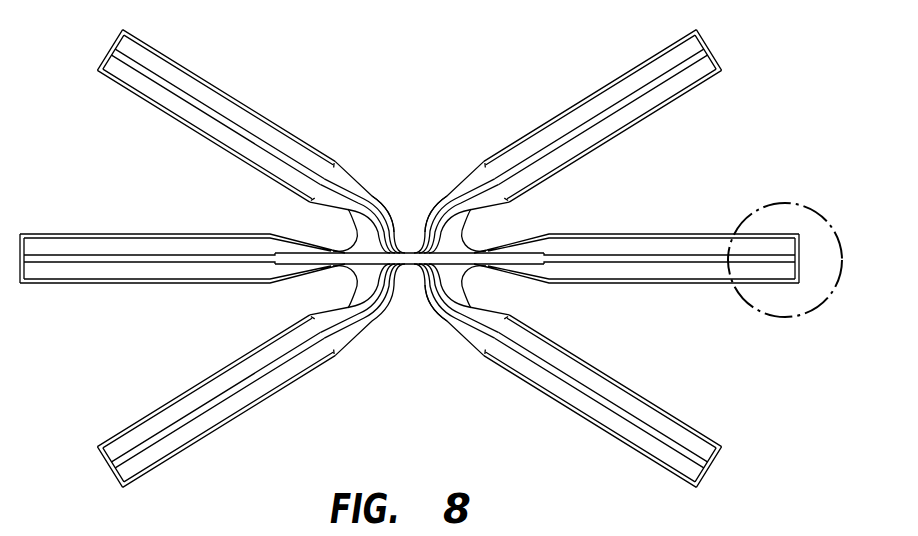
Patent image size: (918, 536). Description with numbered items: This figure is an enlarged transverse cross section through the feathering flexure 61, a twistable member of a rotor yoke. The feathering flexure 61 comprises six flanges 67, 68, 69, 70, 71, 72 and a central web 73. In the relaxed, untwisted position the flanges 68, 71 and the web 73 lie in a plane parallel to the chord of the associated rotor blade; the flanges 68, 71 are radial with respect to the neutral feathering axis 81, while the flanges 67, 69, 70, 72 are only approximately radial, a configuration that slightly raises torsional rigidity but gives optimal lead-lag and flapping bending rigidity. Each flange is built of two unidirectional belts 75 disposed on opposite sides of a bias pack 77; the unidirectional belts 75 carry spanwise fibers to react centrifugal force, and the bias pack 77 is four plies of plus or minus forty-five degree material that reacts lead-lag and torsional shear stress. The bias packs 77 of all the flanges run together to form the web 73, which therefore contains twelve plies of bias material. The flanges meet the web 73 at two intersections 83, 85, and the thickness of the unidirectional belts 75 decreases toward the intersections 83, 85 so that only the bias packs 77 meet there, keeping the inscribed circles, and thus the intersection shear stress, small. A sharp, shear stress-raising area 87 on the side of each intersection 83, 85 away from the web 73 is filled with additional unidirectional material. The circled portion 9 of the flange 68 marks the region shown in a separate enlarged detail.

The portion of flange 9 is at (820, 202).
The feathering flexure 61 is at (426, 119).
The flange 67 is at (567, 86).
The flange 68 is at (646, 297).
The flange 69 is at (618, 463).
The flange 70 is at (160, 389).
The flange 71 is at (89, 296).
The flange 72 is at (203, 50).
The central web 73 is at (440, 262).
The unidirectional belts 75 is at (142, 58).
The bias pack 77 is at (243, 128).
The neutral feathering axis 81 is at (408, 262).
The intersection 83 is at (392, 210).
The intersection 85 is at (432, 212).
The shear stress-raising area 87 is at (354, 240).